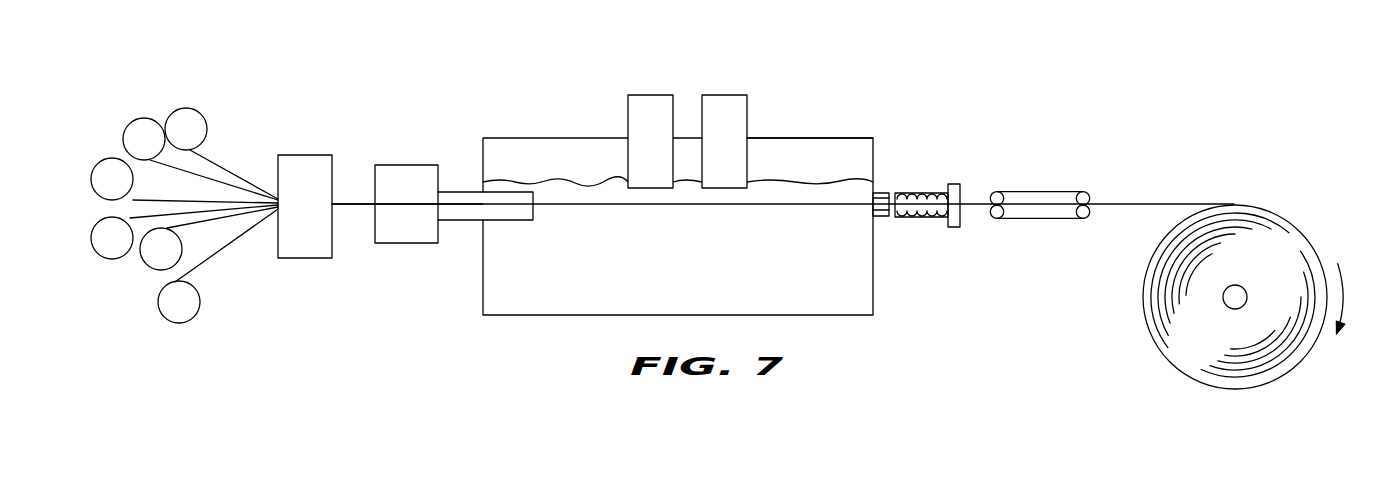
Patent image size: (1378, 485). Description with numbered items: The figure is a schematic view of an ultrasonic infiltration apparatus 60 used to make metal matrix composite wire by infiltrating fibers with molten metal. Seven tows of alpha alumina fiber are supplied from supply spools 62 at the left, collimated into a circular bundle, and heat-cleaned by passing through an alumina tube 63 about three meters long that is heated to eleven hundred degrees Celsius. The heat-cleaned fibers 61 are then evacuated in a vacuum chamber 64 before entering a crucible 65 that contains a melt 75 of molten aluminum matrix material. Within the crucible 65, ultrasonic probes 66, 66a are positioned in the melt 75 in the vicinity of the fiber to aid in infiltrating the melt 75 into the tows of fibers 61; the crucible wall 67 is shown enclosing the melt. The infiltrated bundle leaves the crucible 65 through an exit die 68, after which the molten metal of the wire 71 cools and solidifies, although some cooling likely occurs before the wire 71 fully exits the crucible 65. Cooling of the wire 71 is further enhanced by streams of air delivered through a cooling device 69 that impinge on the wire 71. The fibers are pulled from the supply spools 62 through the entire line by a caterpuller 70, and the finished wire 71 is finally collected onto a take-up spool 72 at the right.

The apparatus 60 is at (125, 296).
The heat-cleaned fibers 61 is at (233, 187).
The supply spools 62 is at (170, 121).
The alumina tube 63 is at (315, 155).
The vacuum chamber 64 is at (412, 165).
The crucible 65 is at (482, 293).
The ultrasonic probe 66 is at (628, 106).
The ultrasonic probe 66a is at (723, 102).
The bath container wall 67 is at (792, 138).
The exit die 68 is at (885, 193).
The cooling device 69 is at (953, 184).
The caterpuller 70 is at (1042, 192).
The wire 71 is at (1145, 203).
The spool 72 is at (1287, 232).
The melt 75 is at (532, 308).